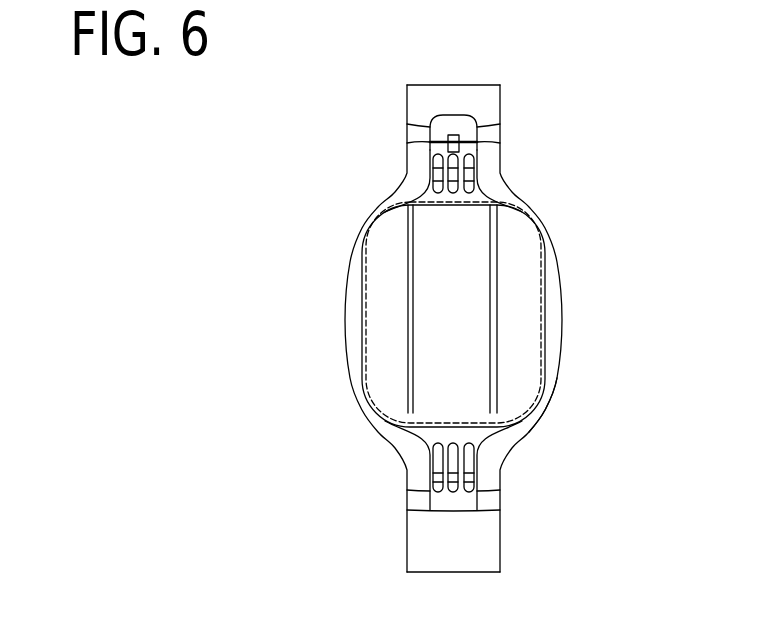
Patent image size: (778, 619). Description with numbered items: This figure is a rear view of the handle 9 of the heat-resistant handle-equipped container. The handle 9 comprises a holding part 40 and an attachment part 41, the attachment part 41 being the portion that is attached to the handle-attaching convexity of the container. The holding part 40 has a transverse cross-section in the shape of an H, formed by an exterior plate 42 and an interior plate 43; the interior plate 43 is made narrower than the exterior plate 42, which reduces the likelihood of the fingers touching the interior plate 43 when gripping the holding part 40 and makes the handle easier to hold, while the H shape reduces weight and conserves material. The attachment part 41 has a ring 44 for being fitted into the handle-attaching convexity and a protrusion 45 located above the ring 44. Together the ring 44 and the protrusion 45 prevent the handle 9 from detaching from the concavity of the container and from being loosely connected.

The handle 9 is at (518, 169).
The holding part 40 is at (463, 252).
The attachment part 41 is at (572, 338).
The exterior plate 42 is at (493, 273).
The interior plate 43 is at (493, 298).
The ring 44 is at (537, 412).
The protrusion 45 is at (470, 124).